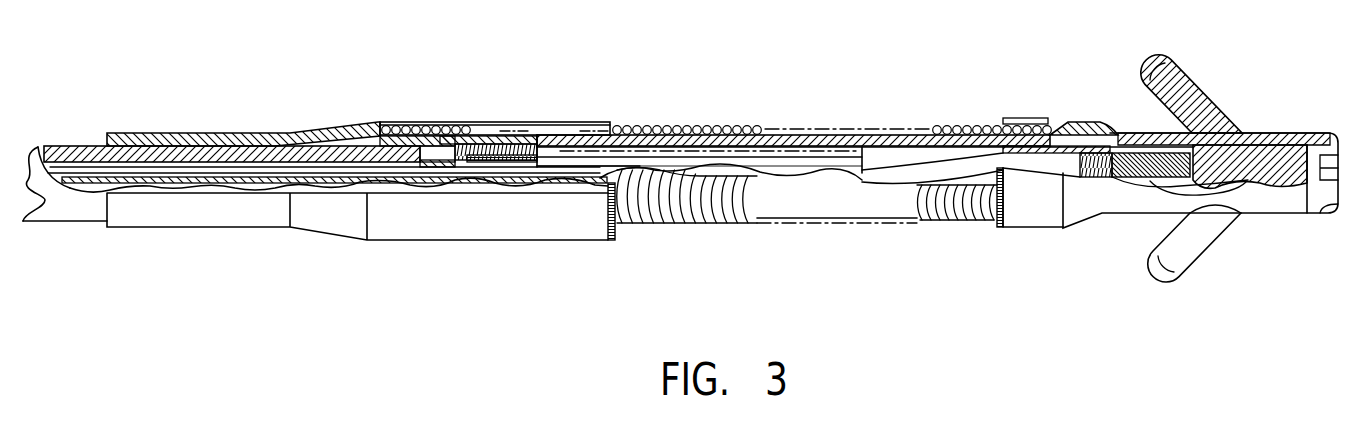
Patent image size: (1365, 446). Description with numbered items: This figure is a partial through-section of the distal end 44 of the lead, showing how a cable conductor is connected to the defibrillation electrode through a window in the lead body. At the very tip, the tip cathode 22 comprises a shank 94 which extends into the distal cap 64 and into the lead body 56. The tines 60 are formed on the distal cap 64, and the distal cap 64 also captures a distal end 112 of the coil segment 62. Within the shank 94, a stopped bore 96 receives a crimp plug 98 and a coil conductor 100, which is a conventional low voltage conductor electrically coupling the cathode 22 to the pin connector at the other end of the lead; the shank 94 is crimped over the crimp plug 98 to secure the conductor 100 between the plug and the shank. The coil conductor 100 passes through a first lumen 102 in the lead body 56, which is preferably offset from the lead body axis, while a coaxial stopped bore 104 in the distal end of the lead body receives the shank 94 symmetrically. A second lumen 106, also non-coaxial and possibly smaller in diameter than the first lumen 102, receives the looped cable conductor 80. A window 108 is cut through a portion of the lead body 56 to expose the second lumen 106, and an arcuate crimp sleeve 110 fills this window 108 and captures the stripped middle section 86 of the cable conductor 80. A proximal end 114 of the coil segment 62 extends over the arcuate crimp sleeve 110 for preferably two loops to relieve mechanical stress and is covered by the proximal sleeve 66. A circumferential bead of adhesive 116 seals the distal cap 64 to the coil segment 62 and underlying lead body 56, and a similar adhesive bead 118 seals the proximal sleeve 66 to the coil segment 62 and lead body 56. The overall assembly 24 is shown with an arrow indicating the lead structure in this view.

The tip cathode 22 is at (1321, 214).
The elongated shaft assembly 24 is at (687, 96).
The distal end 44 is at (285, 90).
The lead body 56 is at (998, 140).
The tines 60 is at (1212, 95).
The coil segment 62 is at (698, 225).
The distal cap 64 is at (1050, 226).
The proximal sleeve 66 is at (457, 122).
The cable conductor 80 is at (147, 163).
The stripped middle section 86 is at (435, 153).
The shank 94 is at (1260, 170).
The stopped bore 96 is at (1104, 148).
The crimp plug 98 is at (1140, 178).
The coil conductor 100 is at (1090, 178).
The first lumen 102 is at (840, 170).
The stopped bore 104 is at (880, 163).
The second lumen 106 is at (97, 172).
The window 108 is at (525, 160).
The arcuate crimp sleeve 110 is at (510, 145).
The distal end 112 is at (1033, 127).
The proximal end 114 is at (397, 124).
The bead of adhesive 116 is at (998, 230).
The adhesive bead 118 is at (613, 241).